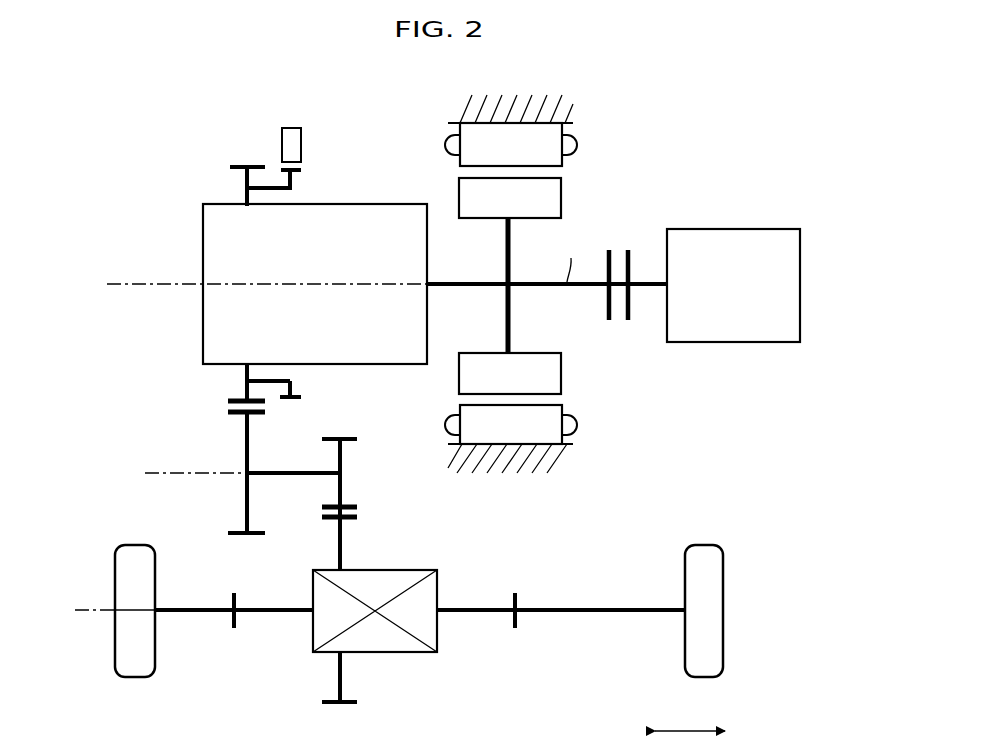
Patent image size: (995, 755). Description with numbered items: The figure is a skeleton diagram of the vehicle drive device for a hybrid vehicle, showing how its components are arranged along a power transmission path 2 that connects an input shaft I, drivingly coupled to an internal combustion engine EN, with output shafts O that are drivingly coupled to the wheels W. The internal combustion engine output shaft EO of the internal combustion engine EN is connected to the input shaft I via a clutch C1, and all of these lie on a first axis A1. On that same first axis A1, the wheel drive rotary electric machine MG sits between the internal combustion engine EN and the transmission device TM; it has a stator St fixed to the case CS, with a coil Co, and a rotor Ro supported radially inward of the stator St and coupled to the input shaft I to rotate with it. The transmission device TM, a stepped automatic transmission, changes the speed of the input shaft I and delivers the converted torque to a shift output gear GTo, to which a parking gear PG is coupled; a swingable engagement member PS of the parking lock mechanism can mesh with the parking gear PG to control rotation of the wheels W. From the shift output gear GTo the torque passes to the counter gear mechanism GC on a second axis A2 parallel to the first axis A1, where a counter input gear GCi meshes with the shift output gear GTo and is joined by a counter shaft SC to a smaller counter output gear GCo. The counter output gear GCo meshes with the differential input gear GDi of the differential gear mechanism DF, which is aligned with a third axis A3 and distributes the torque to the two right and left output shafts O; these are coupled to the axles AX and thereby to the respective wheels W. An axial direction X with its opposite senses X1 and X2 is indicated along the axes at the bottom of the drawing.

The transmission device TM is at (207, 252).
The first axis A1 is at (368, 284).
The shift output gear GTo is at (244, 178).
The parking gear PG is at (293, 186).
The engagement member PS is at (301, 139).
The wheel drive rotary electric machine MG is at (584, 131).
The case CS is at (470, 112).
The stator St is at (511, 283).
The coil Co is at (448, 147).
The rotor Ro is at (510, 286).
The input shaft I is at (569, 257).
The clutch C1 is at (608, 322).
The internal combustion engine output shaft EO is at (647, 283).
The internal combustion engine EN is at (718, 228).
The power transmission path 2 is at (448, 306).
The counter gear mechanism GC is at (212, 432).
The counter input gear GCi is at (246, 518).
The second axis A2 is at (225, 473).
The counter shaft SC is at (303, 475).
The counter output gear GCo is at (358, 500).
The differential gear mechanism DF is at (404, 653).
The differential input gear GDi is at (341, 680).
The third axis A3 is at (96, 610).
The axle AX is at (208, 612).
The output shaft O is at (262, 613).
The wheel W is at (135, 548).
The axial direction X is at (690, 717).
The axial first direction X1 is at (626, 732).
The axial second direction X2 is at (752, 732).